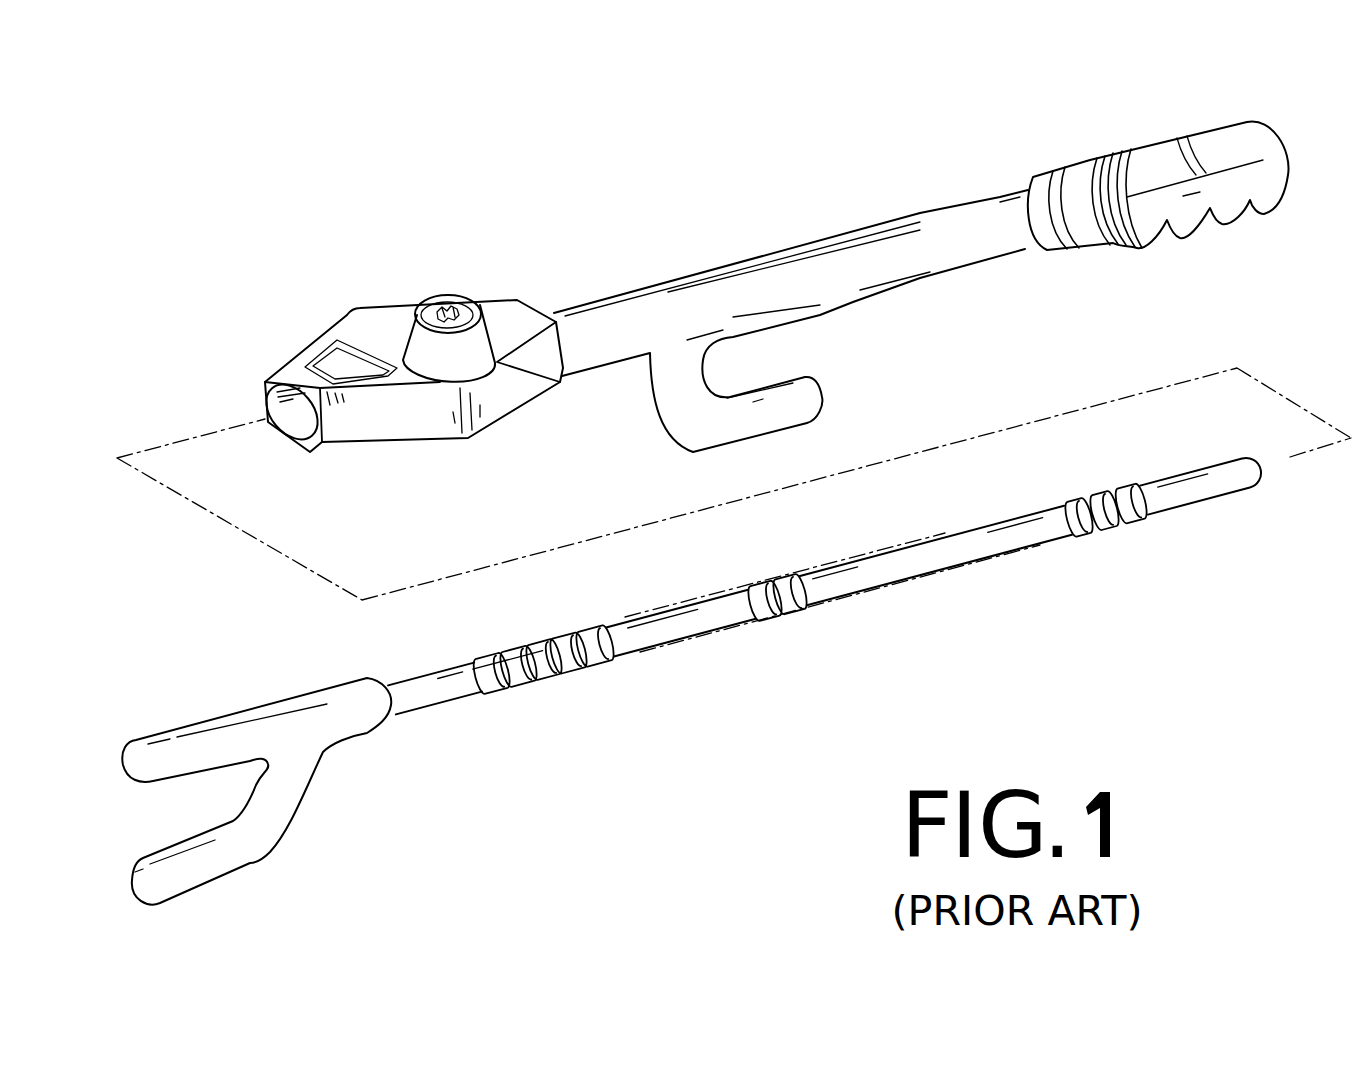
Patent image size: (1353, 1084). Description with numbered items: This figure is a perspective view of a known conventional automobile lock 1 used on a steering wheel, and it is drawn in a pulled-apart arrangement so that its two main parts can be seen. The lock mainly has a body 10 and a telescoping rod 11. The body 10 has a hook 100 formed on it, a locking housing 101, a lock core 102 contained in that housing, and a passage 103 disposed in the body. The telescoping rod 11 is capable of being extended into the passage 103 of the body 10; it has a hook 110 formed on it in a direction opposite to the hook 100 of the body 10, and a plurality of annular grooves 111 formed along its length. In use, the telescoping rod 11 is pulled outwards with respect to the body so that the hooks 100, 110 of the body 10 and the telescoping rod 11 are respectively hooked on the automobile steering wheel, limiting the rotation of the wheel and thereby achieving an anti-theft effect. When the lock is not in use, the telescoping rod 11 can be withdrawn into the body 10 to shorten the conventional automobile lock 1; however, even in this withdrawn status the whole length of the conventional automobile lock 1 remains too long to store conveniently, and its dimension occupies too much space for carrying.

The conventional automobile lock 1 is at (645, 262).
The body 10 is at (873, 226).
The hook 100 is at (820, 393).
The locking housing 101 is at (414, 430).
The lock core 102 is at (449, 298).
The passage 103 is at (290, 412).
The telescoping rod 11 is at (457, 693).
The hook 110 is at (290, 808).
The annular grooves 111 is at (590, 653).